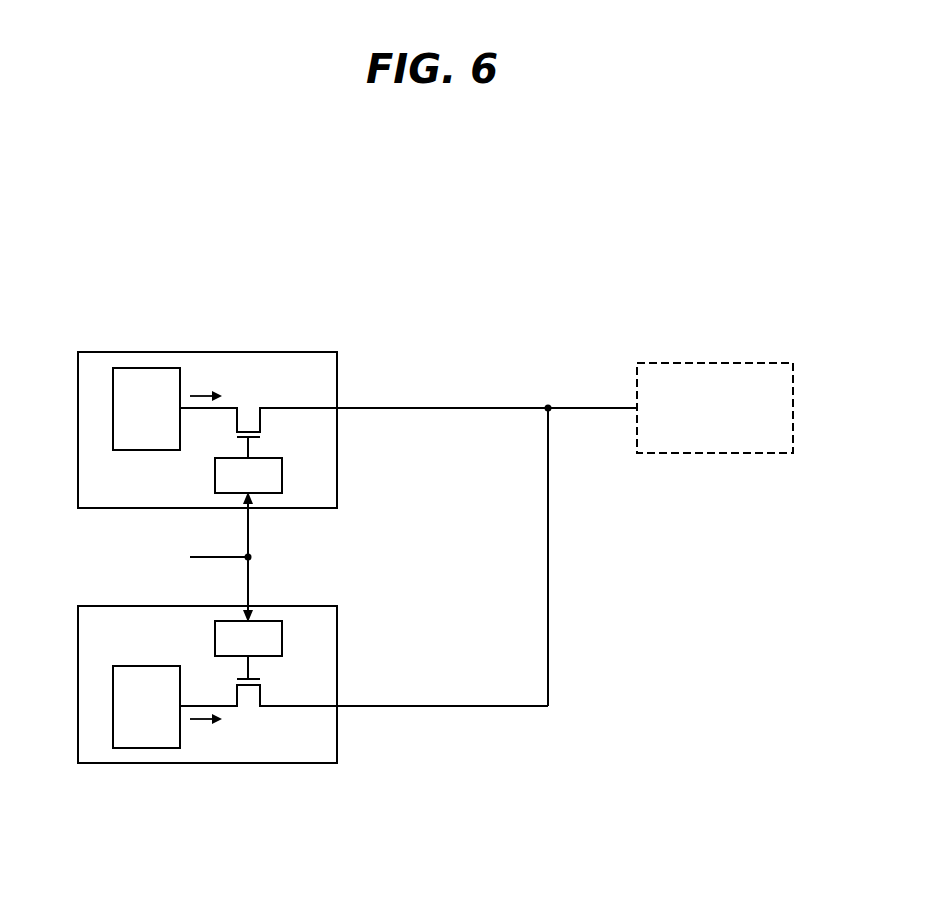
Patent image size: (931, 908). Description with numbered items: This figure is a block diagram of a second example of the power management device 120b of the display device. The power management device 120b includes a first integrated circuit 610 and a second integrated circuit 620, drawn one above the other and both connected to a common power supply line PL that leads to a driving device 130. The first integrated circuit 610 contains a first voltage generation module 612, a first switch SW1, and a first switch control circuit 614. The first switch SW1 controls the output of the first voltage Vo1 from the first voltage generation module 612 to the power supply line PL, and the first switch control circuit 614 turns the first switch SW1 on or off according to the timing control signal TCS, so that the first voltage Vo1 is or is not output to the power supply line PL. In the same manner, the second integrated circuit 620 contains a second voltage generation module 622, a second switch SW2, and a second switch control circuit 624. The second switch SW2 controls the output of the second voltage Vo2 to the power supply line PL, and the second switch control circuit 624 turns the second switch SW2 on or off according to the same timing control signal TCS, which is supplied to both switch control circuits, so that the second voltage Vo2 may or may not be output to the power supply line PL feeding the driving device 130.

The power management device 120b is at (159, 205).
The first integrated circuit 610 is at (252, 350).
The first voltage generation module 612 is at (143, 367).
The first switch control circuit 614 is at (282, 471).
The second integrated circuit 620 is at (282, 765).
The second voltage generation module 622 is at (150, 764).
The second switch control circuit 624 is at (282, 638).
The driving device 130 is at (735, 423).
The first switch SW1 is at (408, 417).
The second switch SW2 is at (364, 699).
The first voltage Vo1 is at (205, 392).
The second voltage Vo2 is at (207, 764).
The timing control signal TCS is at (192, 557).
The power supply line PL is at (588, 407).